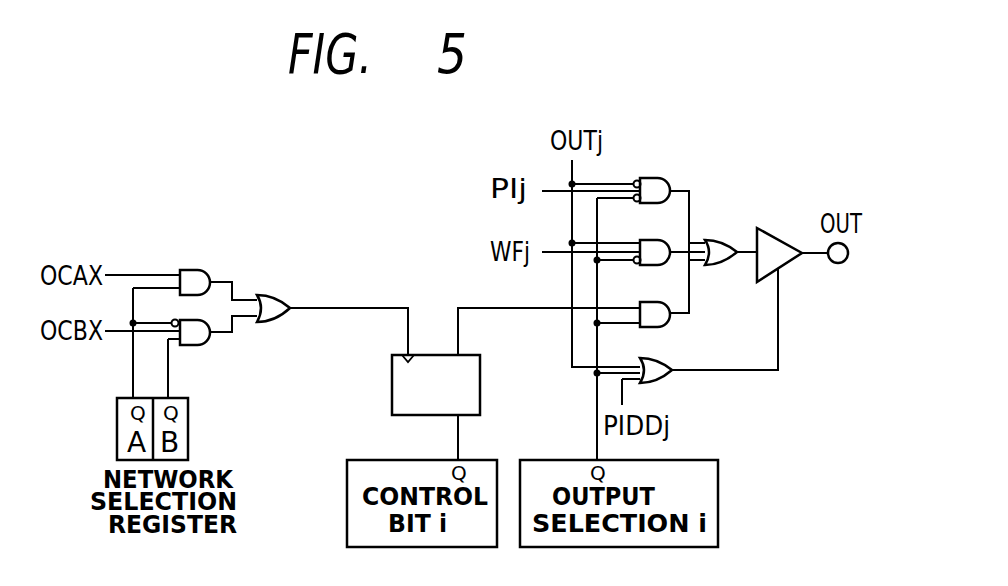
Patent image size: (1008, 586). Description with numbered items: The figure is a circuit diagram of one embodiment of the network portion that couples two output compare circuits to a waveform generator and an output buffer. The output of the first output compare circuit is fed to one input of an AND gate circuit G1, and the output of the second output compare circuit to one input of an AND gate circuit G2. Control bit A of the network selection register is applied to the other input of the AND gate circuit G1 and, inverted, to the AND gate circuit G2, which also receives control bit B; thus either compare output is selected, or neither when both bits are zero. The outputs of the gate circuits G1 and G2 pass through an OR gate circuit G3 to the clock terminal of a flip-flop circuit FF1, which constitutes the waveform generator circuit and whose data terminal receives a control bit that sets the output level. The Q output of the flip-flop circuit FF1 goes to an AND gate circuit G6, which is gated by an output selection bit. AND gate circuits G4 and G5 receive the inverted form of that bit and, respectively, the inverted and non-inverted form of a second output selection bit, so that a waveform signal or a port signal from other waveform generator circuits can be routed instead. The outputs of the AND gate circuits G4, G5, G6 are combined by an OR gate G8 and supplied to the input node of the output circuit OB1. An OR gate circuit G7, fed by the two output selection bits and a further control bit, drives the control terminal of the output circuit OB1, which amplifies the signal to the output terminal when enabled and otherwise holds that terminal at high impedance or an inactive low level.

The AND gate circuit G1 is at (194, 266).
The AND gate circuit G2 is at (194, 348).
The OR gate circuit G3 is at (273, 290).
The AND gate circuit G4 is at (641, 176).
The AND gate circuit G5 is at (641, 236).
The AND gate circuit G6 is at (641, 299).
The OR gate circuit G7 is at (642, 355).
The OR gate G8 is at (721, 236).
The flip-flop circuit FF1 is at (461, 385).
The output circuit OB1 is at (802, 240).